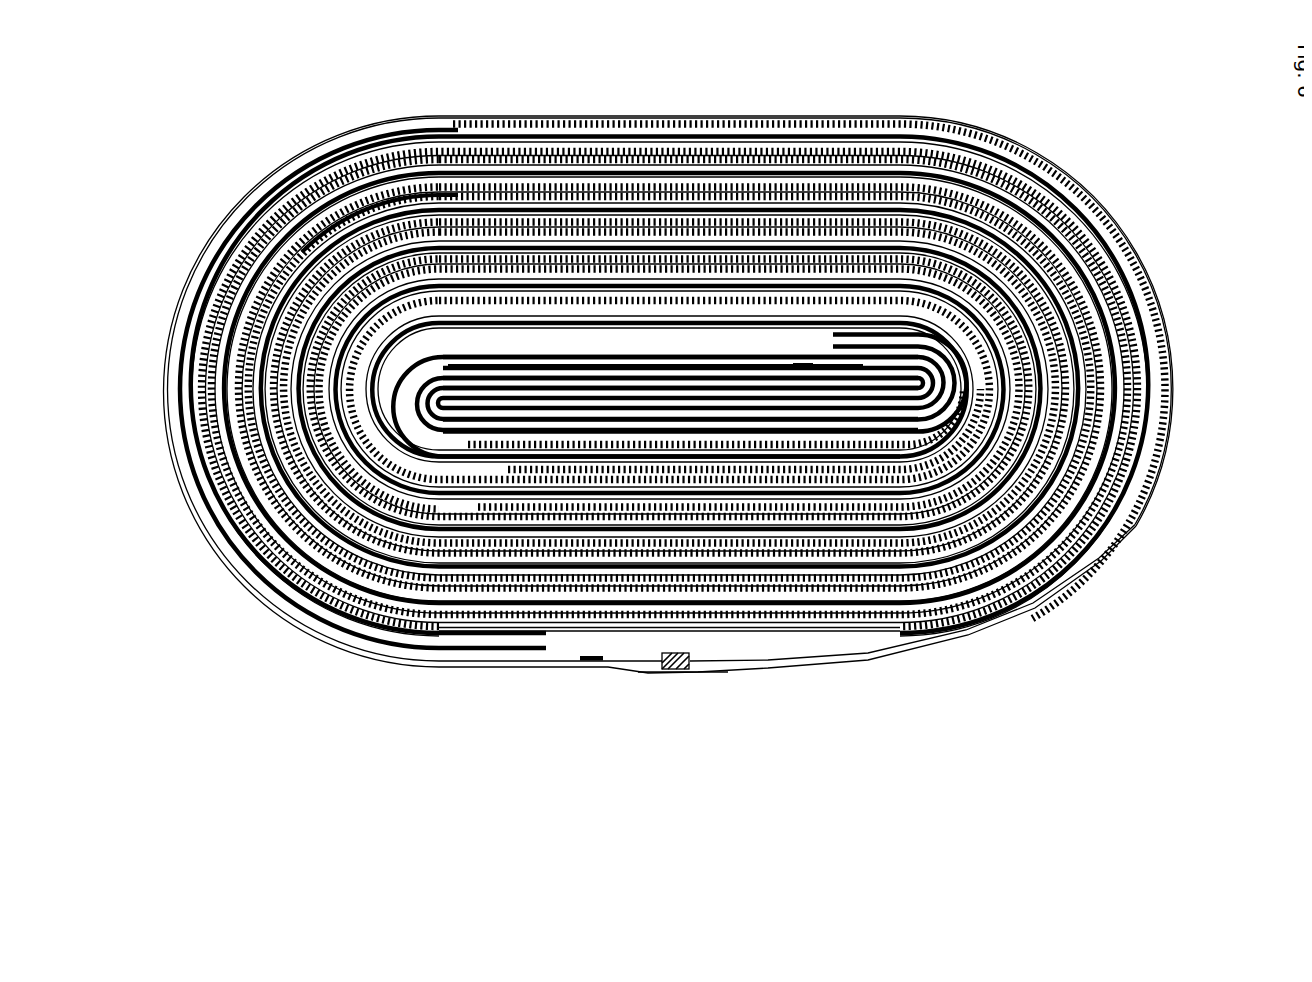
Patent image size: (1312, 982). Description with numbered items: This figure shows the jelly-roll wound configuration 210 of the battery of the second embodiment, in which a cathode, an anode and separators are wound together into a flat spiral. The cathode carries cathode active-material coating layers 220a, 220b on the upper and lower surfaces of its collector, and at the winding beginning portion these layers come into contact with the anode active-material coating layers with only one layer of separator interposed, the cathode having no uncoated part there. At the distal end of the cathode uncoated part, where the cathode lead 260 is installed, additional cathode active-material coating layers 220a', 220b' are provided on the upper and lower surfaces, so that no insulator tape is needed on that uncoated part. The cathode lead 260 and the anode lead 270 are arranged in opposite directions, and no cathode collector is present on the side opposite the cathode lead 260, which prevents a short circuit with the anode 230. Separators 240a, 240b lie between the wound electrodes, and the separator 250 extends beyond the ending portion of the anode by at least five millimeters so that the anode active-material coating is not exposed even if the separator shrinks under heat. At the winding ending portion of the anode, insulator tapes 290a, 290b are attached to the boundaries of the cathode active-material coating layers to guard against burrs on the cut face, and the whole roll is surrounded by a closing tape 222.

The electrode assembly 210 is at (672, 178).
The first electrode 220a is at (669, 318).
The second electrode 220b is at (670, 322).
The cathode active-material coating layer 220a' is at (725, 650).
The cathode active-material coating layer 220b' is at (683, 705).
The closing tape 222 is at (905, 650).
The separator 230 is at (1163, 402).
The first outer separator 240a is at (1167, 306).
The second outer separator 240b is at (1167, 352).
The separator 250 is at (513, 630).
The cathode lead 260 is at (578, 655).
The anode lead 270 is at (790, 357).
The insulator tape 290a is at (332, 216).
The insulator tape 290b is at (378, 114).